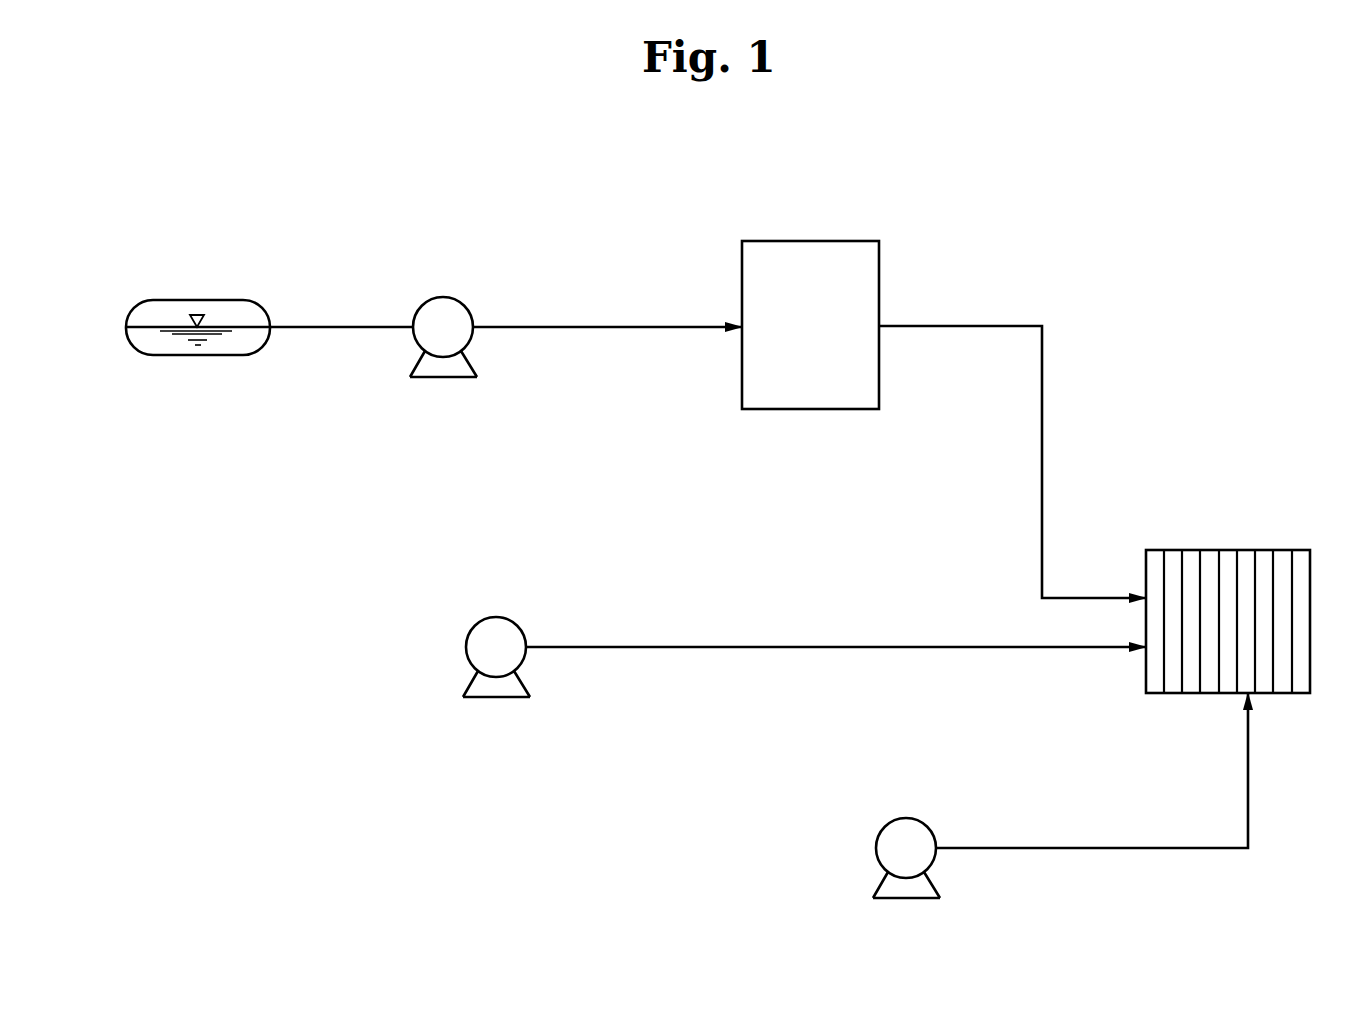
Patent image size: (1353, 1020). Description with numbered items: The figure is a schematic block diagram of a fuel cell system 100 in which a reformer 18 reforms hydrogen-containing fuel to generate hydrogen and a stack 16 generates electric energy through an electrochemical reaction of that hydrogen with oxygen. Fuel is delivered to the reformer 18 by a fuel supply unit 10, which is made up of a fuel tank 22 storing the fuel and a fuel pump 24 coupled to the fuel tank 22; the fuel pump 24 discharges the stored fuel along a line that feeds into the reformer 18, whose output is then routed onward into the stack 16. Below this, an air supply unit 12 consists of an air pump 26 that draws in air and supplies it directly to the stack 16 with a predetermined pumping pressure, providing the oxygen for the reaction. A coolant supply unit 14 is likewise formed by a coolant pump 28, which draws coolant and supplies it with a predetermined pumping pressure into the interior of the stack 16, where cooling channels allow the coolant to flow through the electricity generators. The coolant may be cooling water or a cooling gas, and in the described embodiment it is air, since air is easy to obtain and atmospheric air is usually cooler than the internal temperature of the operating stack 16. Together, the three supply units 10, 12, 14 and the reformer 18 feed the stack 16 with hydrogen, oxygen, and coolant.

The fuel cell system 100 is at (722, 151).
The fuel supply unit 10 is at (480, 200).
The air supply unit 12 is at (440, 632).
The coolant supply unit 14 is at (850, 834).
The stack 16 is at (1268, 538).
The reformer 18 is at (789, 241).
The fuel tank 22 is at (233, 300).
The fuel pump 24 is at (453, 297).
The air pump 26 is at (467, 652).
The coolant pump 28 is at (877, 853).